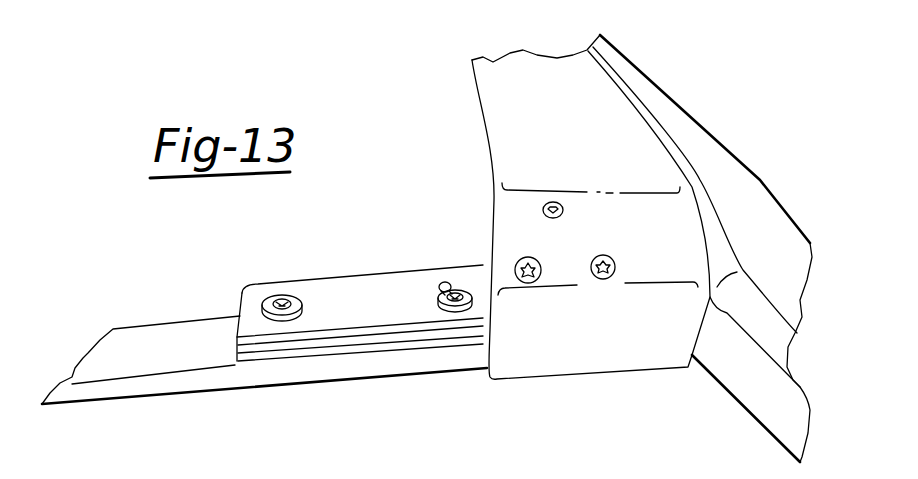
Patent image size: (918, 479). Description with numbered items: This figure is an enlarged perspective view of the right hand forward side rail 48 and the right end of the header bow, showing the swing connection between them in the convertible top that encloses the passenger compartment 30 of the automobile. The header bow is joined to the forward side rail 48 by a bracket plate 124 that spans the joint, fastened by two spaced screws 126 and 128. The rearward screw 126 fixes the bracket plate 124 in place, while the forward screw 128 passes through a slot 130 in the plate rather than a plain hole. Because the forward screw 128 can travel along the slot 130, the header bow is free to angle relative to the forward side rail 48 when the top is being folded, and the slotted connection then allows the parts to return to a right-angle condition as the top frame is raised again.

The passenger compartment 30 is at (533, 149).
The forward side rail 48 is at (183, 333).
The bracket plate 124 is at (347, 290).
The screw 126 is at (264, 304).
The forward screw 128 is at (468, 289).
The slot 130 is at (446, 282).